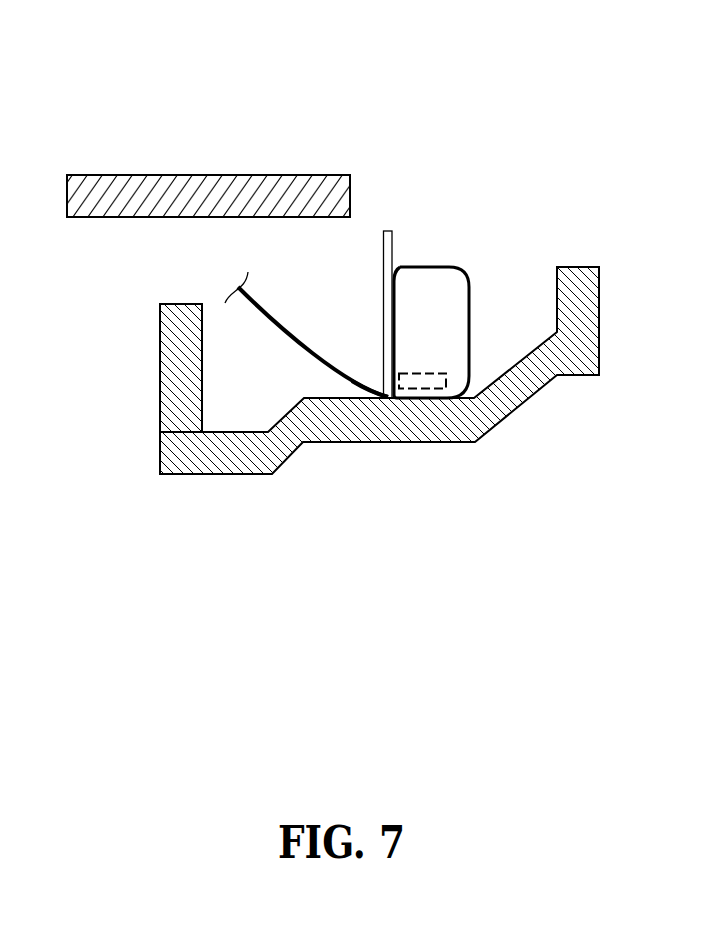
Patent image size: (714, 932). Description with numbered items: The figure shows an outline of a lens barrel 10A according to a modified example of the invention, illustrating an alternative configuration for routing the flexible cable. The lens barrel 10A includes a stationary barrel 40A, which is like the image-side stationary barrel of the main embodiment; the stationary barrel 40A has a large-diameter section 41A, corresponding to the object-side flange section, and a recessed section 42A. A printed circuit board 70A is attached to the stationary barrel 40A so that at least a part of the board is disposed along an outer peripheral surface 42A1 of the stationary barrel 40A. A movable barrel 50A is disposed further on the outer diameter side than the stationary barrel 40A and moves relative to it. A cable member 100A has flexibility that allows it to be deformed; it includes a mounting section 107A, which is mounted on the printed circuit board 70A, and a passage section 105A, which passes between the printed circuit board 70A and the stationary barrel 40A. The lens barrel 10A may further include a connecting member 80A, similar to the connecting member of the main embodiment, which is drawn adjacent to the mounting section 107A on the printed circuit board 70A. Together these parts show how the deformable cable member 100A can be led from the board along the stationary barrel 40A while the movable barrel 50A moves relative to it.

The lens barrel 10A is at (327, 122).
The movable barrel 50A is at (141, 180).
The stationary barrel 40A is at (335, 442).
The large-diameter section 41A is at (160, 368).
The recessed section 42A is at (309, 346).
The outer peripheral surface 42A1 is at (327, 397).
The cable member 100A is at (281, 331).
The printed circuit board 70A is at (388, 228).
The mounting section 107A is at (397, 276).
The connecting member 80A is at (423, 373).
The passage section 105A is at (410, 398).